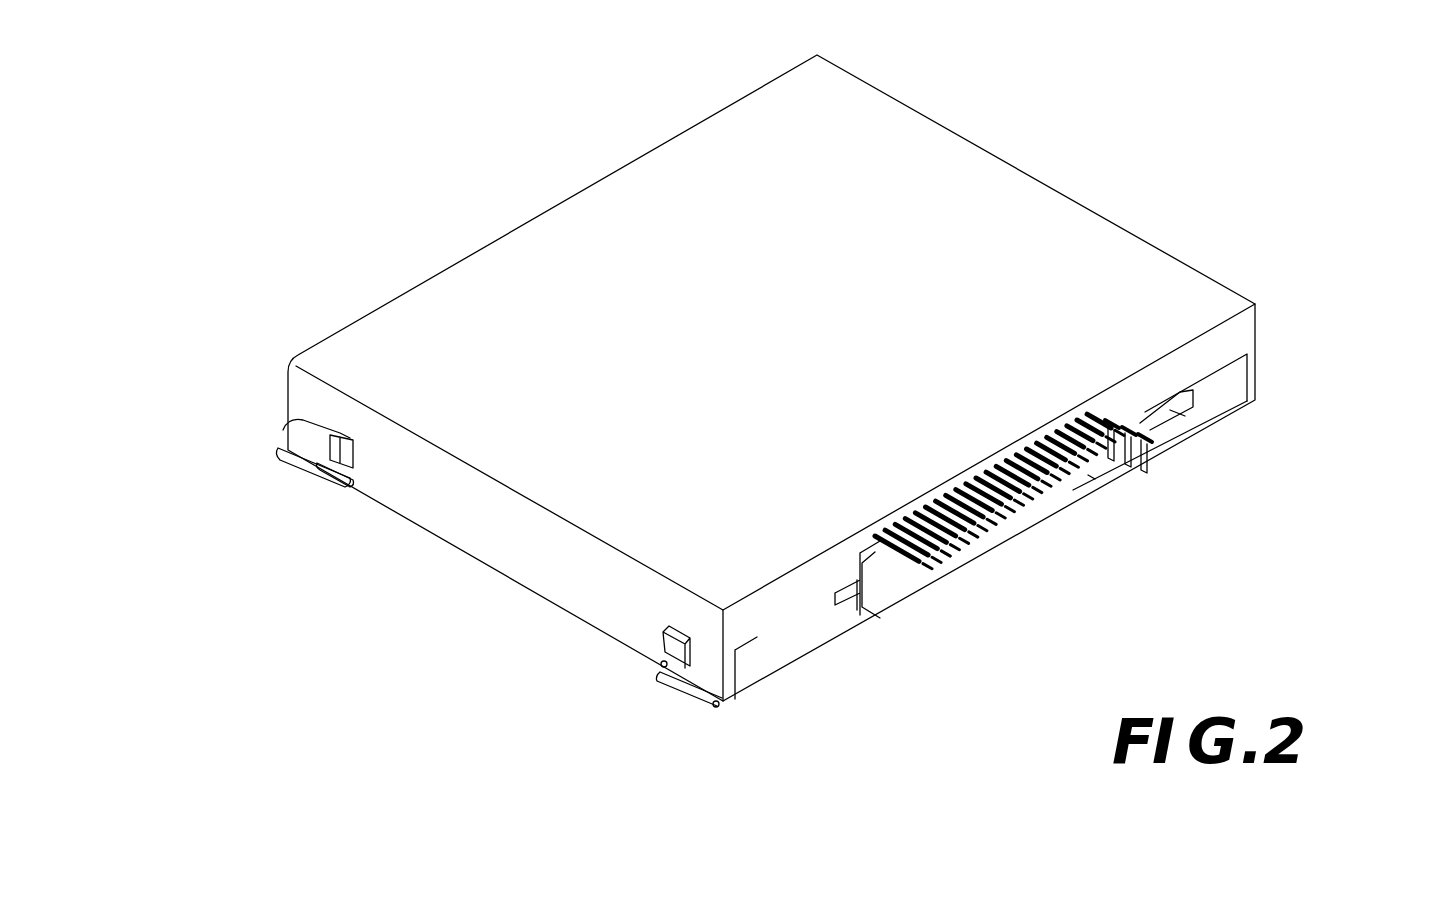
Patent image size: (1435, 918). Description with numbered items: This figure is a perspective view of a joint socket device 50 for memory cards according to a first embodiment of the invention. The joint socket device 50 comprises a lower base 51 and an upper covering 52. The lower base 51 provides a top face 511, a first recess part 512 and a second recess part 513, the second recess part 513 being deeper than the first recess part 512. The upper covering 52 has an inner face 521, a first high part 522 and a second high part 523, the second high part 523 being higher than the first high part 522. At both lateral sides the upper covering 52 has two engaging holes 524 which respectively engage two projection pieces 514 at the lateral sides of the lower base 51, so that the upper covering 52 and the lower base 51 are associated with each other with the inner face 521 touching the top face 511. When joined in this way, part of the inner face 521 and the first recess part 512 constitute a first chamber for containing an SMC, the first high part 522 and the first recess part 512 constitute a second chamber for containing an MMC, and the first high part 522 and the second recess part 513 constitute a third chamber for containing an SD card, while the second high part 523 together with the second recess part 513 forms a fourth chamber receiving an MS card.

The joint socket device 50 is at (441, 565).
The lower base 51 is at (842, 617).
The upper covering 52 is at (755, 618).
The top face 511 is at (1213, 375).
The first recess part 512 is at (1185, 416).
The second recess part 513 is at (1095, 479).
The projection pieces 514 is at (323, 468).
The inner face 521 is at (1167, 420).
The first high part 522 is at (1097, 425).
The second high part 523 is at (1058, 425).
The engaging holes 524 is at (307, 420).